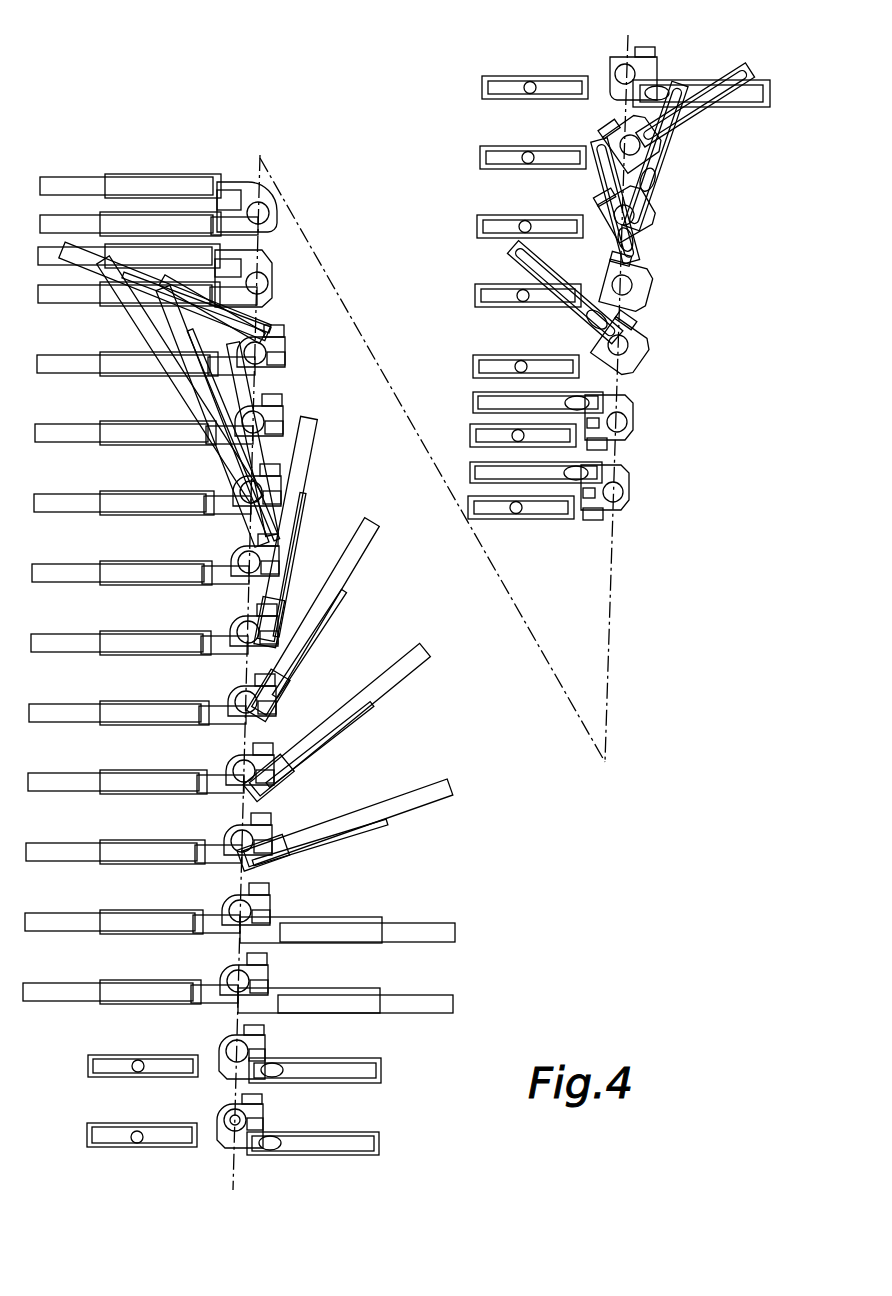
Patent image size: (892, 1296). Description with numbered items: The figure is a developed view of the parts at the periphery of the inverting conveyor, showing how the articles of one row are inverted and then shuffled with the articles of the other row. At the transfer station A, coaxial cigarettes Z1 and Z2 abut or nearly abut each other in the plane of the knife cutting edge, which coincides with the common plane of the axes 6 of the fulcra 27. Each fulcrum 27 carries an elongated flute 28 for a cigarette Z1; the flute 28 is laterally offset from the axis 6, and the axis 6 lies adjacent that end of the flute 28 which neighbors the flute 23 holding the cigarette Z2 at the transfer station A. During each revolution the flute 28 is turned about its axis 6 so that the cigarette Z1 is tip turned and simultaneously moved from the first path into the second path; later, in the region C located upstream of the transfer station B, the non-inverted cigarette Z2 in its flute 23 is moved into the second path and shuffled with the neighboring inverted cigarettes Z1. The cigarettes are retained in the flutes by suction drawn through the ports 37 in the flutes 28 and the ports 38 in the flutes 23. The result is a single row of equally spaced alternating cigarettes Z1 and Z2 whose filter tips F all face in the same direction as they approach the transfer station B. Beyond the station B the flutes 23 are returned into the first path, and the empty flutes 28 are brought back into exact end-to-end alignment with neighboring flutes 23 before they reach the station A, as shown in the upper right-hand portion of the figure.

The axis 6 is at (228, 1133).
The flute 23 is at (186, 1150).
The fulcrum 27 is at (235, 1131).
The flute 28 is at (345, 1154).
The suction port 37 is at (268, 1148).
The suction port 38 is at (133, 1142).
The cigarette Z1 is at (418, 1010).
The cigarette Z2 is at (50, 997).
The filter tip F is at (232, 183).
The transfer station A is at (525, 966).
The transfer station B is at (360, 232).
The region C is at (360, 281).